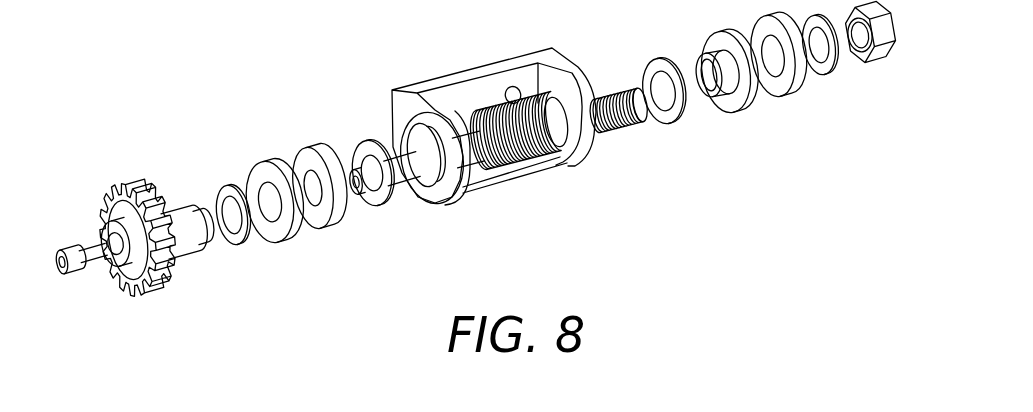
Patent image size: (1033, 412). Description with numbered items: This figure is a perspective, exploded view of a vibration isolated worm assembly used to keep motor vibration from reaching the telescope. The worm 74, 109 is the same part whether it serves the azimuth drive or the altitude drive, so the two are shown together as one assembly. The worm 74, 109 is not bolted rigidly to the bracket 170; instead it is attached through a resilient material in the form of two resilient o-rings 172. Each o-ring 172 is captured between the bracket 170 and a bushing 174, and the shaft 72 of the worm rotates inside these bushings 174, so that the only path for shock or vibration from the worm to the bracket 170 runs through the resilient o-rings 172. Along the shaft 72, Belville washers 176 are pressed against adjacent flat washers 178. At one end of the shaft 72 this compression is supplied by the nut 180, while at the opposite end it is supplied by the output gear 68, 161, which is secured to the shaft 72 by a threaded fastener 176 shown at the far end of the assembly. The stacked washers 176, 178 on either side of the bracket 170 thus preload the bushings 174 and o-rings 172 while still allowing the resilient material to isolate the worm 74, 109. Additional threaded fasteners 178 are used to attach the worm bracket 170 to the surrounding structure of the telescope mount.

The output gear 68 is at (156, 265).
The output gear 161 is at (167, 294).
The shaft 72 is at (420, 210).
The worm 74 is at (559, 163).
The worm 109 is at (523, 172).
The bracket 170 is at (463, 68).
The resilient o-ring 172 is at (385, 210).
The bushing 174 is at (323, 150).
The Belville washer 176 is at (72, 250).
The flat washer 178 is at (292, 244).
The nut 180 is at (883, 63).